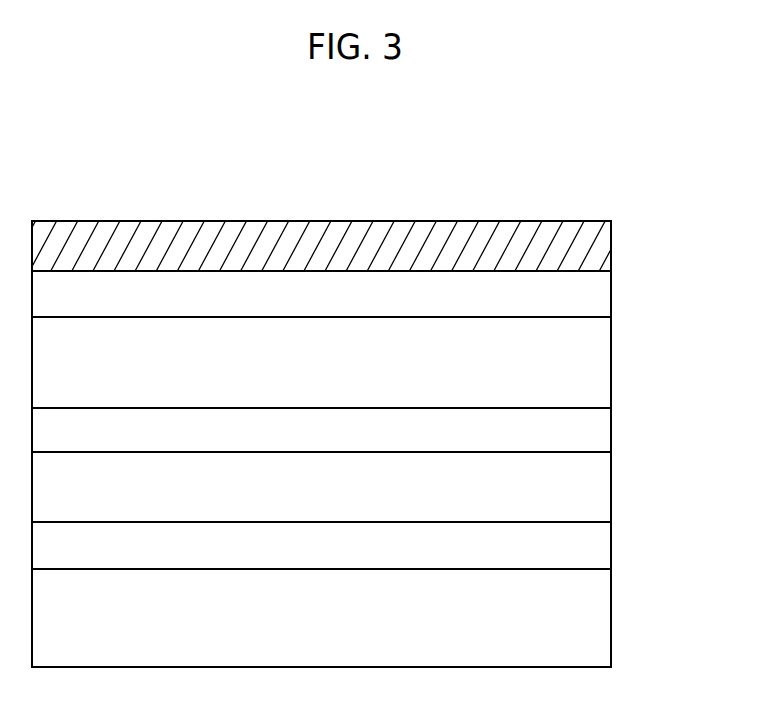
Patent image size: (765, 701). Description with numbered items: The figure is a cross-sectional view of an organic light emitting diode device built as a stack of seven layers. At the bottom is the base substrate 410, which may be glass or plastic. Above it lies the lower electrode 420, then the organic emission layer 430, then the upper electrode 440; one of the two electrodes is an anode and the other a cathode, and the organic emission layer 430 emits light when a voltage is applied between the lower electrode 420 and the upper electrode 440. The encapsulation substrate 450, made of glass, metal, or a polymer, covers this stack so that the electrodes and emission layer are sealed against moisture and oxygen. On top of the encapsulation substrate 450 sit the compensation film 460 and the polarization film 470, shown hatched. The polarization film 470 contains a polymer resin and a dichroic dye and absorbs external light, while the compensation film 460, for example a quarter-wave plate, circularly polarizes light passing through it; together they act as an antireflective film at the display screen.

The base substrate 410 is at (609, 628).
The lower electrode 420 is at (609, 548).
The organic emission layer 430 is at (609, 492).
The upper electrode 440 is at (609, 433).
The encapsulation substrate 450 is at (609, 365).
The compensation film 460 is at (609, 295).
The polarization film 470 is at (609, 248).